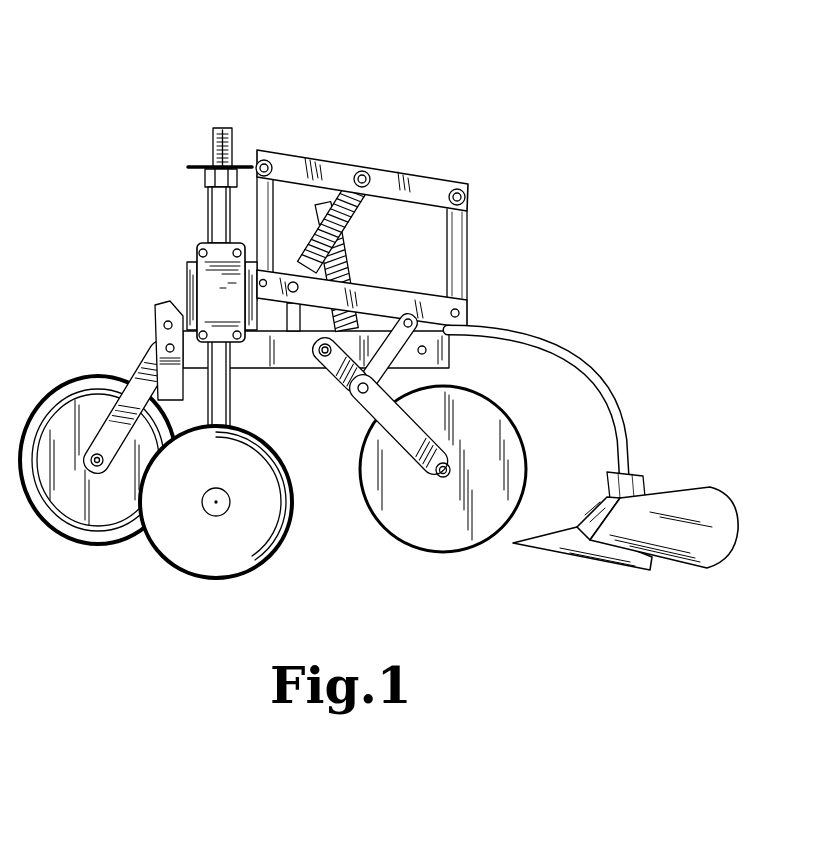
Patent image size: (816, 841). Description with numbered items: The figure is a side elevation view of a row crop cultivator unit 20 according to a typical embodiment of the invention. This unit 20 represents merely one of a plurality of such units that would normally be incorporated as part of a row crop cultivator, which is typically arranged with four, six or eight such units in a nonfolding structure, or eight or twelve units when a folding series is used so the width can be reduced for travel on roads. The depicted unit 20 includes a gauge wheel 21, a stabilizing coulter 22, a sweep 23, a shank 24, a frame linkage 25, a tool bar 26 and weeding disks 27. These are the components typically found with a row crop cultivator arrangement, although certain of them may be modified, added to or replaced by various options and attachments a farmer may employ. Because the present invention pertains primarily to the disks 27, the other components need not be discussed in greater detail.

The row crop cultivator unit 20 is at (376, 133).
The gauge wheel 21 is at (90, 385).
The stabilizing coulter 22 is at (445, 540).
The sweep 23 is at (578, 545).
The shank 24 is at (628, 453).
The frame linkage 25 is at (467, 220).
The tool bar 26 is at (277, 357).
The weeding disks 27 is at (263, 533).